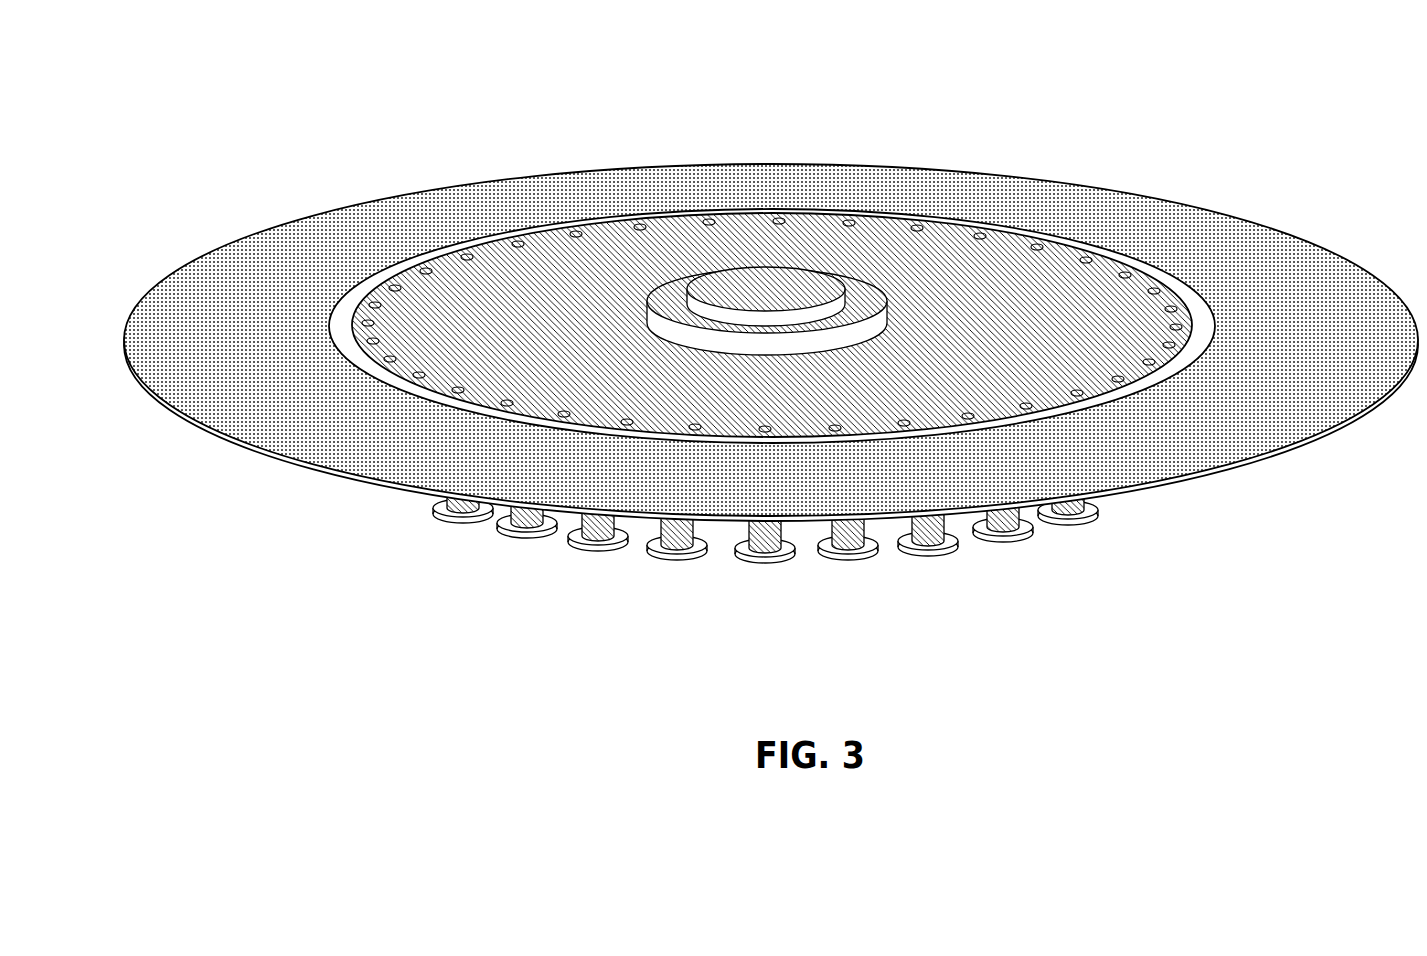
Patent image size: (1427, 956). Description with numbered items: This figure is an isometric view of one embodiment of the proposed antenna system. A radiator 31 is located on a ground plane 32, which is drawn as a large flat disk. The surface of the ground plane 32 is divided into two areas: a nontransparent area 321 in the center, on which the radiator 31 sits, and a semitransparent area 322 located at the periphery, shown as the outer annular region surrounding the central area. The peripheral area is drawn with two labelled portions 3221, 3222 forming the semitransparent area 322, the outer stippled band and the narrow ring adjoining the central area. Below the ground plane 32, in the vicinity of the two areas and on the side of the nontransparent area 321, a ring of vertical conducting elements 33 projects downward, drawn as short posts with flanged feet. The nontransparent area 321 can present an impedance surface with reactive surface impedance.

The radiator 31 is at (783, 268).
The ground plane 32 is at (771, 338).
The nontransparent area 321 is at (585, 268).
The semitransparent area 322 is at (352, 150).
The outer annular region 3221 is at (217, 320).
The annular groove 3222 is at (352, 305).
The vertical conducting elements 33 is at (860, 558).